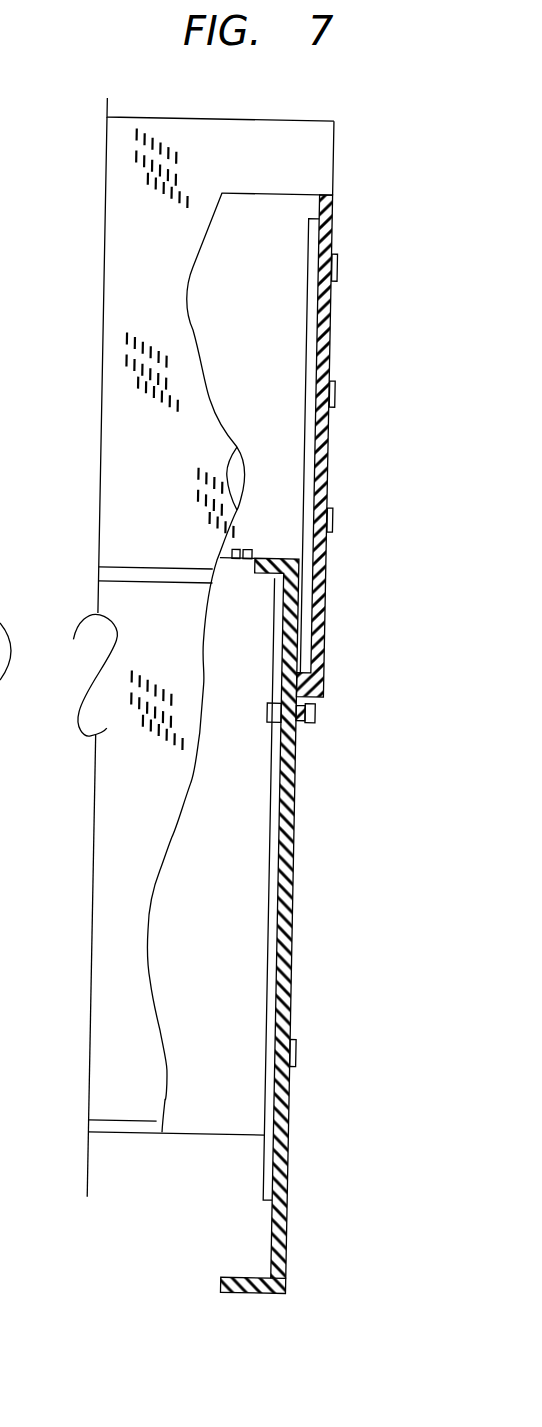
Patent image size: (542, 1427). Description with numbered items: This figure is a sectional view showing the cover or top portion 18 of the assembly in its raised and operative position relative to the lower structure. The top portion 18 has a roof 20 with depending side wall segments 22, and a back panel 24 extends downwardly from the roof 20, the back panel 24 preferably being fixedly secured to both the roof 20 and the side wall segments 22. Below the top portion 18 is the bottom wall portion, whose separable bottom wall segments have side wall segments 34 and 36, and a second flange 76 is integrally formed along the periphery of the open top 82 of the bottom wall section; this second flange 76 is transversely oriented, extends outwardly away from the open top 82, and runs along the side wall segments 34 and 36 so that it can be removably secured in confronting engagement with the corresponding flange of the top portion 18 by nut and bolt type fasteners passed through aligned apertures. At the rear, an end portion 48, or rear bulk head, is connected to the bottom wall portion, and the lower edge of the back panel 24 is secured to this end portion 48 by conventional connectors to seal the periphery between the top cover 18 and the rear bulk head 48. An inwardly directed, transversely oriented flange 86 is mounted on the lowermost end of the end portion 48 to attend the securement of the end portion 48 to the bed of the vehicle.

The top portion 18 is at (366, 146).
The roof 20 is at (280, 117).
The back panel 24 is at (333, 193).
The side wall segments 22 is at (200, 468).
The open top 82 is at (234, 452).
The second flange 76 is at (260, 557).
The side wall segment 36 is at (137, 822).
The side wall segment 34 is at (257, 950).
The end portion 48 is at (324, 1001).
The inwardly directed flange 86 is at (240, 1278).